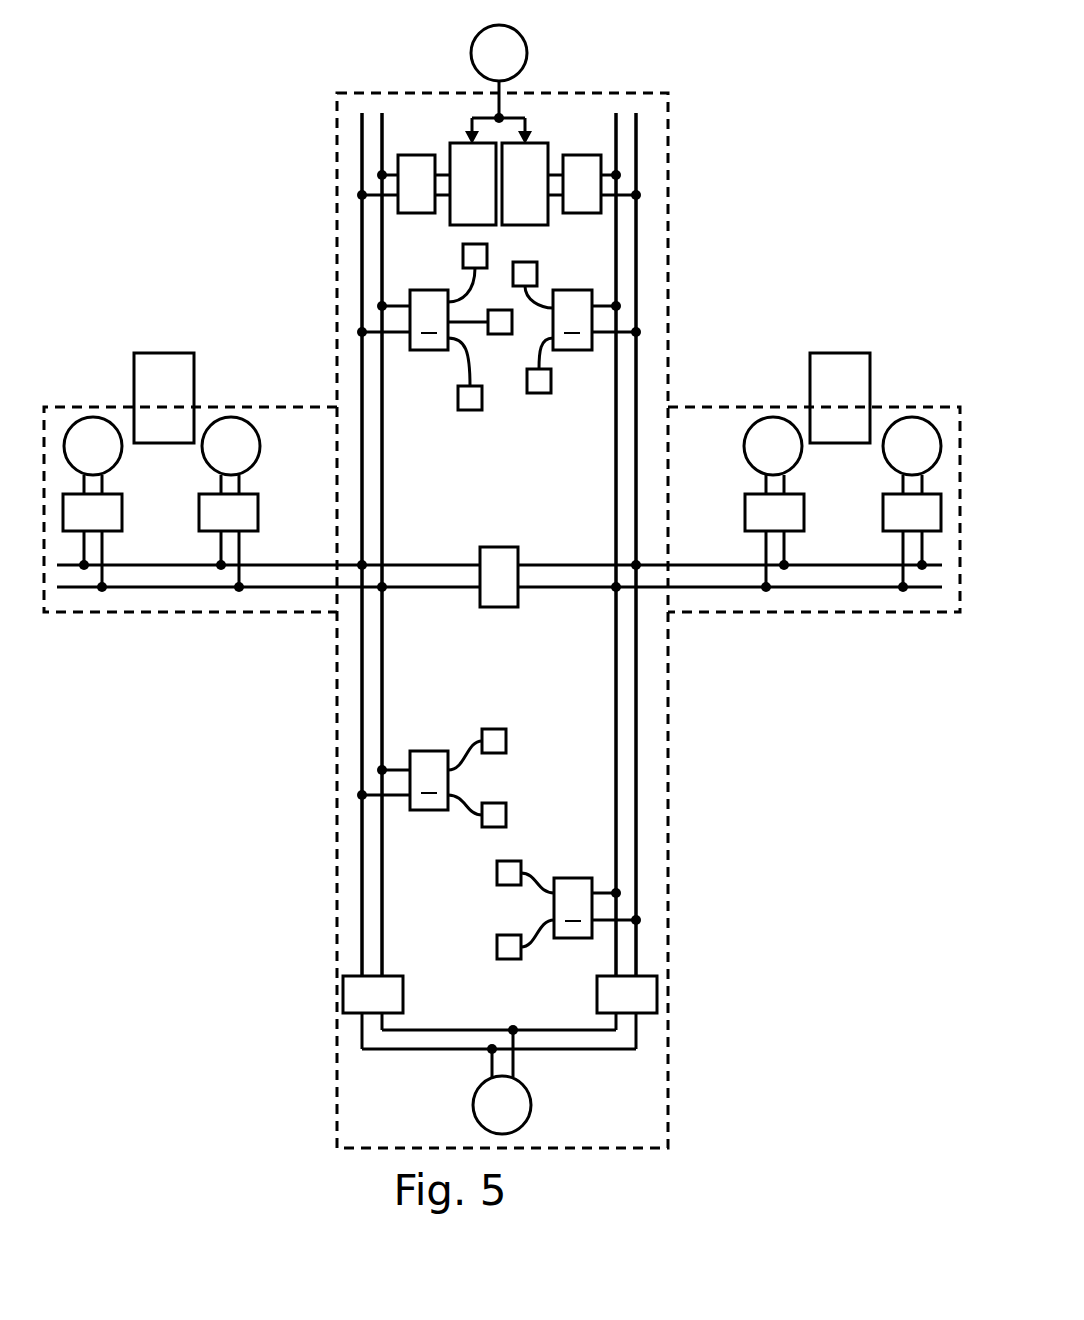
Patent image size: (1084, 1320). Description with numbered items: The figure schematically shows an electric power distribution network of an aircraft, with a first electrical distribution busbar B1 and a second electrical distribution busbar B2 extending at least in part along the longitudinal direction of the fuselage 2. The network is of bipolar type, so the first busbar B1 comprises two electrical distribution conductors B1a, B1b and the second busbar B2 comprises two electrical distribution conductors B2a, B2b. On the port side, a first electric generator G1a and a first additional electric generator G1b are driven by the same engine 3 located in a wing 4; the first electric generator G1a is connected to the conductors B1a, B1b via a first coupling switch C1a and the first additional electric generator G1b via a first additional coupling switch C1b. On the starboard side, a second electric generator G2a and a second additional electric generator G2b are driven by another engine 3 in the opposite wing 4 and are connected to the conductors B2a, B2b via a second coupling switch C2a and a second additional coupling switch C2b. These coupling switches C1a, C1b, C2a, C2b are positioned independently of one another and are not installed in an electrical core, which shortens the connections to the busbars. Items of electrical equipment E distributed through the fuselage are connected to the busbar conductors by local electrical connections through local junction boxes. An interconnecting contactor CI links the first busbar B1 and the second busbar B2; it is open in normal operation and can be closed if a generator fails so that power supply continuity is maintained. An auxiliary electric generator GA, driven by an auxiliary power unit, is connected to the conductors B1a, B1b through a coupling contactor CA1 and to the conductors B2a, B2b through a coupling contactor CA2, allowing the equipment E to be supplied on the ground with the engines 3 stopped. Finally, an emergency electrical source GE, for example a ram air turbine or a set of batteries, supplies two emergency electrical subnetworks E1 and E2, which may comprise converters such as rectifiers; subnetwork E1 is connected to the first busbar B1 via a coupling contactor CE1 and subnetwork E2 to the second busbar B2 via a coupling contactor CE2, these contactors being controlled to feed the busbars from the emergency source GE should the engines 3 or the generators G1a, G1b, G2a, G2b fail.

The fuselage 2 is at (668, 307).
The propulsion engine 3 is at (165, 353).
The wing 4 is at (175, 613).
The emergency electrical source GE is at (527, 53).
The coupling contactor CE1 is at (416, 155).
The coupling contactor CE2 is at (580, 155).
The emergency electrical subnetwork E1 is at (460, 195).
The emergency electrical subnetwork E2 is at (512, 195).
The first electrical distribution busbar B1 is at (355, 257).
The second electrical distribution busbar B2 is at (650, 257).
The electrical distribution conductor B1a is at (382, 643).
The electrical distribution conductor B1b is at (362, 673).
The electrical distribution conductor B2a is at (616, 643).
The electrical distribution conductor B2b is at (636, 673).
The items of electrical equipment E is at (487, 413).
The interconnecting contactor CI is at (505, 547).
The first electric generator G1a is at (93, 417).
The first additional electric generator G1b is at (231, 417).
The second electric generator G2a is at (912, 417).
The second additional electric generator G2b is at (773, 417).
The first coupling switch C1a is at (122, 506).
The first additional coupling switch C1b is at (258, 506).
The second coupling switch C2a is at (883, 506).
The second additional coupling switch C2b is at (745, 506).
The coupling contactor CA1 is at (343, 994).
The coupling contactor CA2 is at (657, 994).
The auxiliary electric generator GA is at (531, 1108).